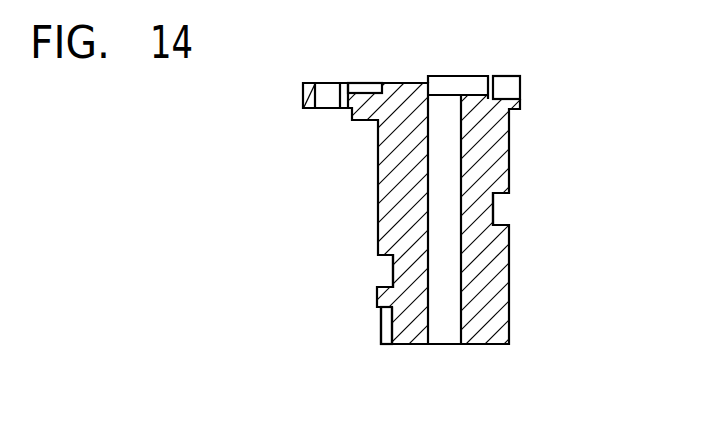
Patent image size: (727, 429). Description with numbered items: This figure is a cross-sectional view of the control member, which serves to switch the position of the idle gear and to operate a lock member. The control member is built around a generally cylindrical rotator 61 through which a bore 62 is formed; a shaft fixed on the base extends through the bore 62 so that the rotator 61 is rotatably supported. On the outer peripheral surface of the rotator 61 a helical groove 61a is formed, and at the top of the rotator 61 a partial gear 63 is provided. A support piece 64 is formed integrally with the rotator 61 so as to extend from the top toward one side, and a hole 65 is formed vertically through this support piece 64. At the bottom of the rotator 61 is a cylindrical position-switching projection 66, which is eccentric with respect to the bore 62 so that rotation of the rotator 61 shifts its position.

The rotator 61 is at (510, 288).
The helical groove 61a is at (497, 208).
The bore 62 is at (462, 113).
The partial gear 63 is at (507, 90).
The support piece 64 is at (352, 108).
The hole 65 is at (318, 104).
The position-switching projection 66 is at (382, 333).